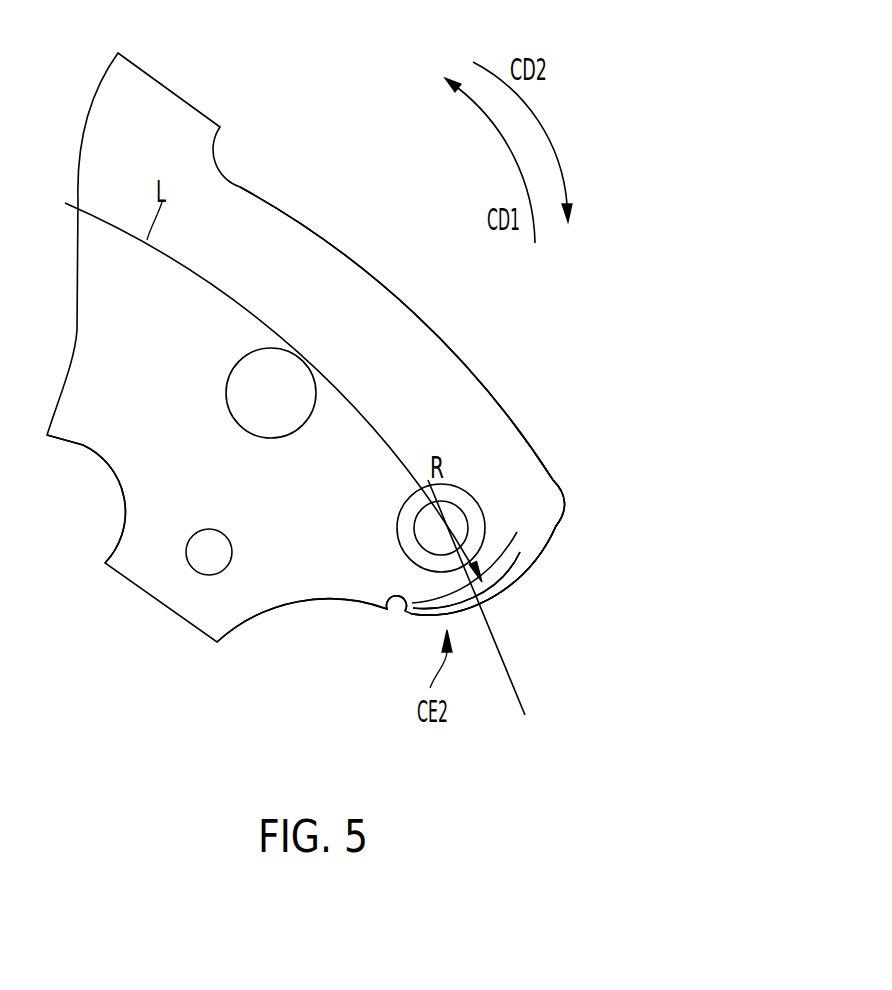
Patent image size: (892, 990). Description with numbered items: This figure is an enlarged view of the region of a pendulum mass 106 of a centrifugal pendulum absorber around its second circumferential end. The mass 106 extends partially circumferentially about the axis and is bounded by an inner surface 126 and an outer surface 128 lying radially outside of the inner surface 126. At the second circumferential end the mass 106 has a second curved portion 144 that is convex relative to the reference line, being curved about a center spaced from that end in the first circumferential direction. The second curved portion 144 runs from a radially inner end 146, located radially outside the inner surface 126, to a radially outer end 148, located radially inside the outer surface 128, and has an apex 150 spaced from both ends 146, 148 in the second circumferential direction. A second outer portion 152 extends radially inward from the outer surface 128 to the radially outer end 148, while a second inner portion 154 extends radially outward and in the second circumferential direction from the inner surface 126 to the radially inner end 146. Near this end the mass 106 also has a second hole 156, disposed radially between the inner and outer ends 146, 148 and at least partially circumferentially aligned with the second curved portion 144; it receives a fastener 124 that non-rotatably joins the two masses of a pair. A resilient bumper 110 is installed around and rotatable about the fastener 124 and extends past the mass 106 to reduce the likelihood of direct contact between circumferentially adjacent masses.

The pendulum mass 106 is at (242, 200).
The outer surface 128 is at (383, 284).
The inner surface 126 is at (83, 445).
The second inner portion 154 is at (260, 615).
The radially inner end 146 is at (392, 617).
The fastener 124 is at (460, 507).
The second hole 156 is at (414, 518).
The second curved portion 144 is at (500, 560).
The apex 150 is at (473, 590).
The second outer portion 152 is at (507, 560).
The radially outer end 148 is at (533, 543).
The resilient bumper 110 is at (527, 563).